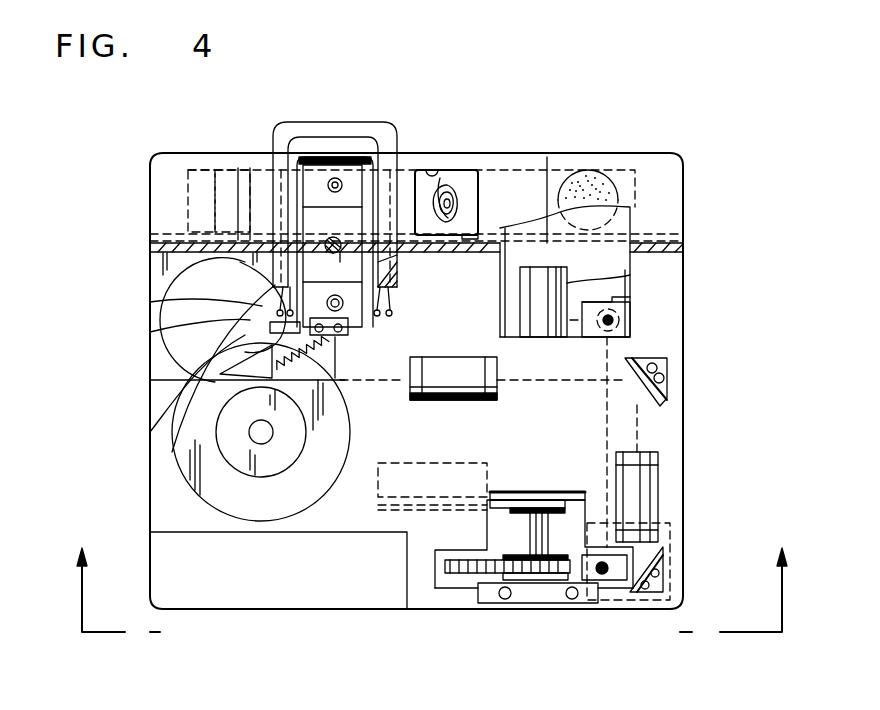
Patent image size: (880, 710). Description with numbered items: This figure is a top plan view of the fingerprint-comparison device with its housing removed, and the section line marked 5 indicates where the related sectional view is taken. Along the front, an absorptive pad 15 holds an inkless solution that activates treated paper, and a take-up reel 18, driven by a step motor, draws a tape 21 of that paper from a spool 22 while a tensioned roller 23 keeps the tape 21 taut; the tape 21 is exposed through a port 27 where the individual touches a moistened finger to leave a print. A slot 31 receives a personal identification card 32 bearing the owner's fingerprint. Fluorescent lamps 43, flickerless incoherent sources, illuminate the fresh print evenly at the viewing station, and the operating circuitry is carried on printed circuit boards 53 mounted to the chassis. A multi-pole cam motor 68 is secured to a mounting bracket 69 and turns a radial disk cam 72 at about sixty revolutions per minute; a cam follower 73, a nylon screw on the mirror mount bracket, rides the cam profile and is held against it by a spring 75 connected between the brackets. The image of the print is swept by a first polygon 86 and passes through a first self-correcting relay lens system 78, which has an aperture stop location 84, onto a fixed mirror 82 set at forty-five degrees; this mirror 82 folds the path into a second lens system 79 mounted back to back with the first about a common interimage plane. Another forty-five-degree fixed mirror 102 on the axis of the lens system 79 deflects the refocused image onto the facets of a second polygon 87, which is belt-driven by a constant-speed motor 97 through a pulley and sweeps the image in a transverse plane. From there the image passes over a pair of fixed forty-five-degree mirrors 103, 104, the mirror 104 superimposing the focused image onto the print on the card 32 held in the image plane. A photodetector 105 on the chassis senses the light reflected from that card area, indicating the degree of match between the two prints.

The absorptive pad 15 is at (600, 177).
The take-up reel 18 is at (218, 196).
The tape 21 is at (455, 175).
The spool 22 is at (523, 168).
The tensioned roller 23 is at (192, 190).
The port 27 is at (432, 172).
The slot 31 is at (615, 267).
The personal identification card 32 is at (640, 325).
The fluorescent lamps 43 is at (383, 170).
The printed circuit boards 53 is at (416, 381).
The cam motor 68 is at (183, 280).
The mounting bracket 69 is at (215, 360).
The radial disk cam 72 is at (250, 320).
The cam follower 73 is at (175, 302).
The spring 75 is at (172, 420).
The first optical relay lens system 78 is at (448, 400).
The second optical relay lens system 79 is at (645, 503).
The fixed mirror 82 is at (665, 398).
The aperture stop location 84 is at (338, 380).
The first polygon 86 is at (250, 513).
The second polygon 87 is at (518, 573).
The second constant-speed motor 97 is at (398, 628).
The fixed mirror 102 is at (662, 563).
The fixed mirror 103 is at (607, 583).
The fixed mirror 104 is at (628, 313).
The photodetector 105 is at (628, 278).
The section line 5- 5 is at (441, 590).